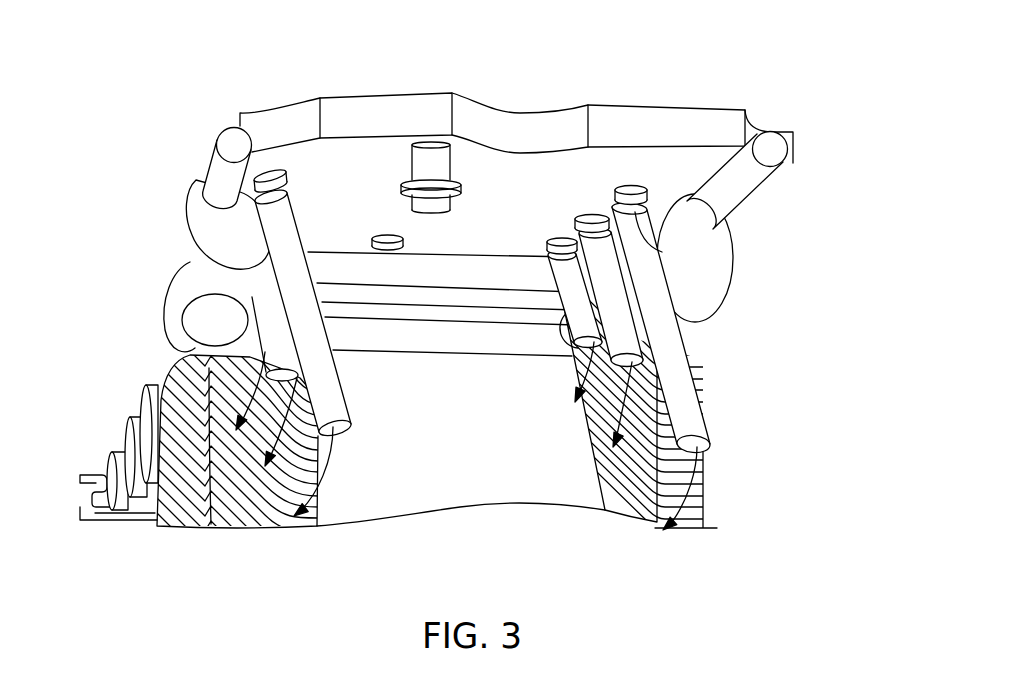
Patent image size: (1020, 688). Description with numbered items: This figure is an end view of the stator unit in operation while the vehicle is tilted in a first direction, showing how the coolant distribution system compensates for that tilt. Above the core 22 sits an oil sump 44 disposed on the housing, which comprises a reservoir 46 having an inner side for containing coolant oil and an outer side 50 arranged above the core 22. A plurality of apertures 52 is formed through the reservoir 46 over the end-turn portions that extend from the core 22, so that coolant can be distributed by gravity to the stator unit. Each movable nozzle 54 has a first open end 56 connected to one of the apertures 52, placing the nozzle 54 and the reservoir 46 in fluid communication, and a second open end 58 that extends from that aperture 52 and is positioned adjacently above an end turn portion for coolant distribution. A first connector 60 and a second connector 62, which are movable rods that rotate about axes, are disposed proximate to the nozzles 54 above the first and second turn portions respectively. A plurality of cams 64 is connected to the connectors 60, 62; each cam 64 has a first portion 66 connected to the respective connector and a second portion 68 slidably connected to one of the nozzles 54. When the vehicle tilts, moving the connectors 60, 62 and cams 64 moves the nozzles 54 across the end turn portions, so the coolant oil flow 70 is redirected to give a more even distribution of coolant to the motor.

The core 22 is at (466, 478).
The oil sump 44 is at (527, 84).
The reservoir 46 is at (270, 117).
The outer side 50 is at (503, 187).
The aperture 52 is at (300, 200).
The movable nozzle 54 is at (670, 351).
The first open end 56 is at (655, 252).
The second open end 58 is at (697, 447).
The first connector 60 is at (230, 169).
The second connector 62 is at (748, 176).
The cam 64 is at (693, 283).
The first portion 66 is at (228, 240).
The second portion 68 is at (288, 285).
The coolant oil flow 70 is at (322, 464).